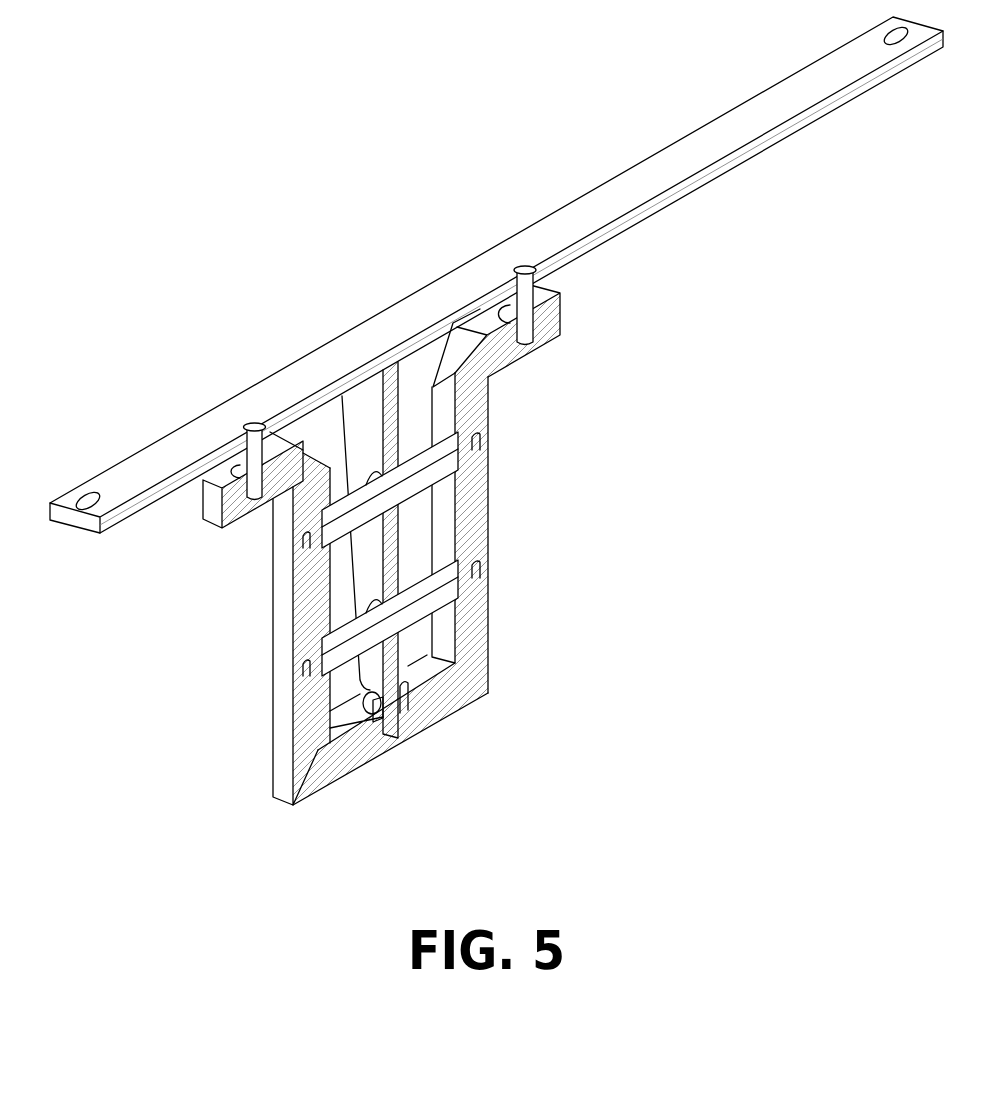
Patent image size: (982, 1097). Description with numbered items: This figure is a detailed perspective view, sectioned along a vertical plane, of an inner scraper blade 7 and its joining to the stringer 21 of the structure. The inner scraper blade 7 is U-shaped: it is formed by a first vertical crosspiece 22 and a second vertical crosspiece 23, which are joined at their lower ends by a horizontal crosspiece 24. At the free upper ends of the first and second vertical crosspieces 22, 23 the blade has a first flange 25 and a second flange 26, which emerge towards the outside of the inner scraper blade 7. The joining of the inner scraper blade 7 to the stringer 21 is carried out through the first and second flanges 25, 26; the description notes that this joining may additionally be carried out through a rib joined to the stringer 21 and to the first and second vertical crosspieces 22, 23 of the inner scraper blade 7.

The inner scraper blade 7 is at (533, 627).
The stringer 21 is at (737, 157).
The first vertical crosspiece 22 is at (298, 627).
The second vertical crosspiece 23 is at (483, 523).
The horizontal crosspiece 24 is at (428, 717).
The first flange 25 is at (232, 513).
The second flange 26 is at (547, 322).